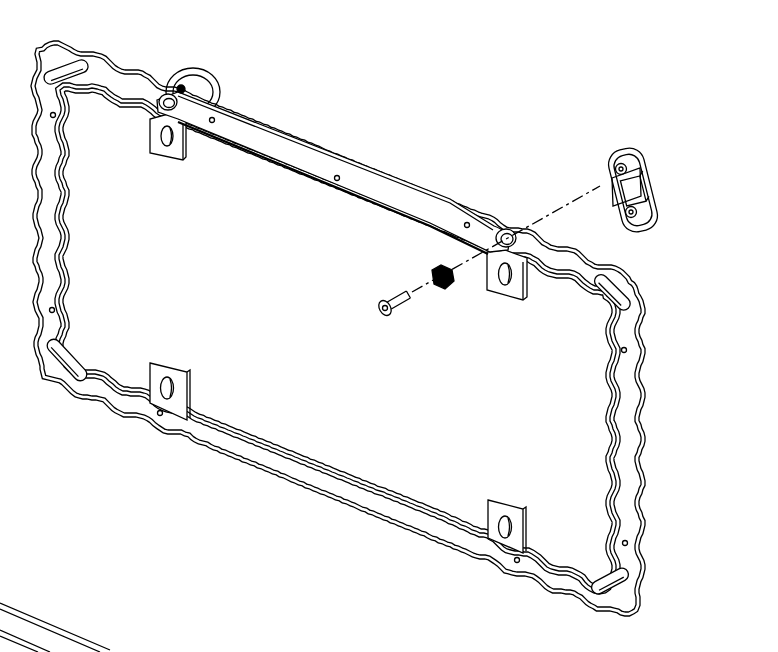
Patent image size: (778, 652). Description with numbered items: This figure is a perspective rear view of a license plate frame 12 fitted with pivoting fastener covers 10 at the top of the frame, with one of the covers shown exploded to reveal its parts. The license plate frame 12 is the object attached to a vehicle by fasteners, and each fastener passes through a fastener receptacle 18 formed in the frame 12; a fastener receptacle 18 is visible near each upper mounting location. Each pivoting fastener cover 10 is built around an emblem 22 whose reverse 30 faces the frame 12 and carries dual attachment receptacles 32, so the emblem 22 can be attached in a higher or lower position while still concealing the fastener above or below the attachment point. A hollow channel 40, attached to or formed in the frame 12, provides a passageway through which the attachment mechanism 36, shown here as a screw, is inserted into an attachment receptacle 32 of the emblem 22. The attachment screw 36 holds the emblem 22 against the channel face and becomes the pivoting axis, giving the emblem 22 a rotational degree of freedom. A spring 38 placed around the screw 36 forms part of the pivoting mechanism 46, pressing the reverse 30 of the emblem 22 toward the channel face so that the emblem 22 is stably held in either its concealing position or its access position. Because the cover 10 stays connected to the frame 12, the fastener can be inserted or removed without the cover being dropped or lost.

The pivoting fastener cover 10 is at (246, 160).
The license plate frame 12 is at (212, 456).
The fastener receptacle 18 is at (168, 160).
The emblem 22 is at (213, 78).
The reverse 30 is at (608, 186).
The attachment receptacle 32 is at (614, 158).
The attachment mechanism 36 is at (178, 84).
The spring 38 is at (450, 287).
The hollow channel 40 is at (166, 110).
The pivoting mechanism 46 is at (333, 235).